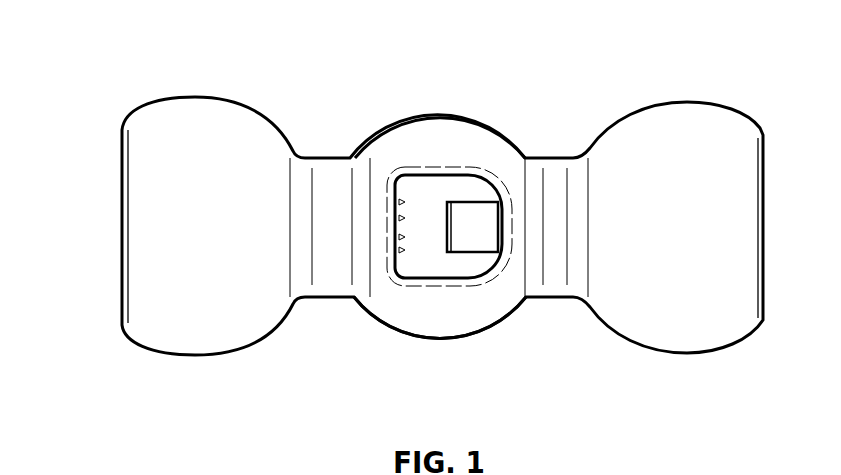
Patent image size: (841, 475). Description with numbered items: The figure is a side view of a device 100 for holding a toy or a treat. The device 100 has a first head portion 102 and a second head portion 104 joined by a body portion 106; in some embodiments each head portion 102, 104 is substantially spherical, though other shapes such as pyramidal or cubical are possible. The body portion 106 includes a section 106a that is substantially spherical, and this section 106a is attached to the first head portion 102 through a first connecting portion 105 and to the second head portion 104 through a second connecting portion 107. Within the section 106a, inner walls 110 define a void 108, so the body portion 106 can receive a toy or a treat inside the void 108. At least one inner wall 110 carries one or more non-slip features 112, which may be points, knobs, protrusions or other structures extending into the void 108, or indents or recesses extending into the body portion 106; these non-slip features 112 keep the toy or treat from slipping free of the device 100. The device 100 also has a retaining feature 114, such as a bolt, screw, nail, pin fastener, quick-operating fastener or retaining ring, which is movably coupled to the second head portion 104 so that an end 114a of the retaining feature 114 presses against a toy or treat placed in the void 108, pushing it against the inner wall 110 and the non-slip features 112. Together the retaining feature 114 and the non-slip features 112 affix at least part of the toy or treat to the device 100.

The device 100 is at (120, 95).
The first head portion 102 is at (229, 104).
The second head portion 104 is at (663, 102).
The first connecting portion 105 is at (342, 287).
The body portion 106 is at (439, 95).
The section 106a is at (490, 315).
The second connecting portion 107 is at (553, 287).
The void 108 is at (403, 270).
The inner wall 110 is at (400, 195).
The non-slip feature 112 is at (415, 186).
The retaining feature 114 is at (480, 218).
The end 114a is at (447, 240).